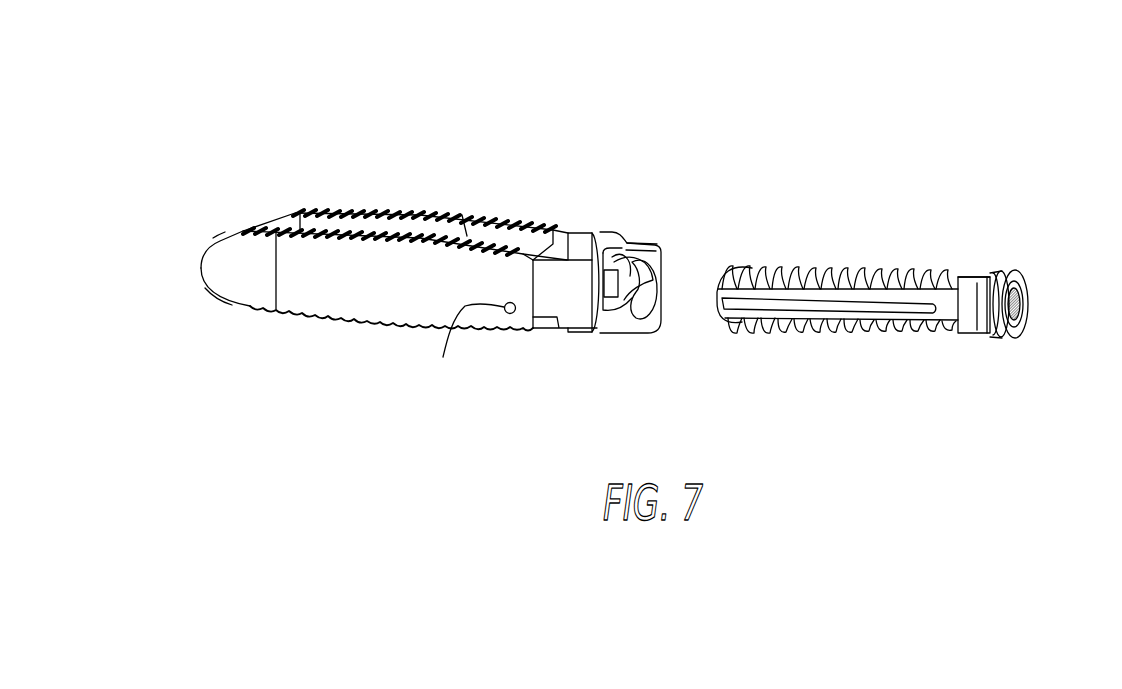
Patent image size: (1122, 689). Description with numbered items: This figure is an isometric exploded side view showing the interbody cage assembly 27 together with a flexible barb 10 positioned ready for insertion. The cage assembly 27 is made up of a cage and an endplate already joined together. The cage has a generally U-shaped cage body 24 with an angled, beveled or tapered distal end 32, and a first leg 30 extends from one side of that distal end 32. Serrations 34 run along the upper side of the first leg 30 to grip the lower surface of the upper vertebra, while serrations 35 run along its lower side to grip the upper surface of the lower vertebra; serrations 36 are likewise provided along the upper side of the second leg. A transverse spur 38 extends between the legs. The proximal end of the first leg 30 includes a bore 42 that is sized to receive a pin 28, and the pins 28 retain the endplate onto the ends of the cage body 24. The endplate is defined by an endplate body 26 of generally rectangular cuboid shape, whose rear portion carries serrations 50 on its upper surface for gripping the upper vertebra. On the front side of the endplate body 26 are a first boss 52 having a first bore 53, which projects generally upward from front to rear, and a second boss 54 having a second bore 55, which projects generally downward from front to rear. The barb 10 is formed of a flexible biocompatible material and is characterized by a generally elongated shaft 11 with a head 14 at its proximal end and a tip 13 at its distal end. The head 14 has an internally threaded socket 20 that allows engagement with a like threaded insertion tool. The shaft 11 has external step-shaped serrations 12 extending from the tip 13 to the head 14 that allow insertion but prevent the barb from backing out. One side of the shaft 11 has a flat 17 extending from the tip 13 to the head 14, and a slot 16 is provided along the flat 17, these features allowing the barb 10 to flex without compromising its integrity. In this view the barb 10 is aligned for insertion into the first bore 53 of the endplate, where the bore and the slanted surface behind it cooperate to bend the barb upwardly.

The flexible barb 10 is at (880, 286).
The shaft 11 is at (968, 275).
The serrations 12 is at (840, 330).
The tip 13 is at (717, 300).
The head 14 is at (1013, 338).
The slot 16 is at (768, 330).
The flat 17 is at (955, 315).
The internally threaded socket 20 is at (1016, 300).
The cage body 24 is at (226, 309).
The endplate body 26 is at (555, 329).
The interbody cage assembly 27 is at (445, 281).
The pin 28 is at (506, 313).
The first leg 30 is at (380, 292).
The distal end 32 is at (217, 240).
The serrations 34 is at (295, 270).
The serrations 35 is at (307, 320).
The serrations 36 is at (323, 225).
The spur 38 is at (423, 227).
The bore 42 is at (443, 357).
The serrations 50 is at (560, 226).
The first boss 52 is at (652, 298).
The first bore 53 is at (603, 310).
The second boss 54 is at (647, 313).
The second bore 55 is at (660, 252).